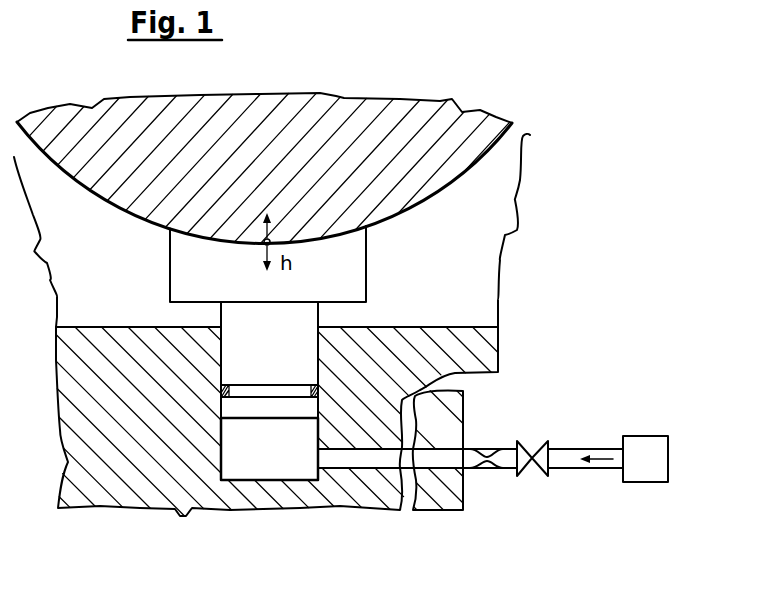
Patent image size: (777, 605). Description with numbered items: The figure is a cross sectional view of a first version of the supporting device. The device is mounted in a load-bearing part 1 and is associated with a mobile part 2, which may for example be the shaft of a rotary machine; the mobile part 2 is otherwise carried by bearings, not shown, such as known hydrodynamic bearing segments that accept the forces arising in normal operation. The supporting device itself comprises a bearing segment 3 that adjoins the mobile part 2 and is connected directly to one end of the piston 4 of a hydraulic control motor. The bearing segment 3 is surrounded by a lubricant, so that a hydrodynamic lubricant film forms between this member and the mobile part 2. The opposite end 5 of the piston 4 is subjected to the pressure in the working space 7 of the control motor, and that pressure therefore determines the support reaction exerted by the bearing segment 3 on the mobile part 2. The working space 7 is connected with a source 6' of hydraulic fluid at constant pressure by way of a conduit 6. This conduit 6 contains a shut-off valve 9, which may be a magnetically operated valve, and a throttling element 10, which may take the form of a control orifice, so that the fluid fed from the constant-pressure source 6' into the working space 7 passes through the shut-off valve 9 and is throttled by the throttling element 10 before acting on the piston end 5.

The load-bearing part 1 is at (119, 485).
The mobile part 2 is at (368, 120).
The bearing segment 3 is at (362, 265).
The piston 4 is at (307, 320).
The opposite end of piston 5 is at (228, 420).
The conduit 6 is at (470, 477).
The source of hydraulic fluid at constant pressure 6' is at (651, 490).
The working space 7 is at (278, 468).
The shut-off valve 9 is at (530, 447).
The throttling element 10 is at (489, 453).